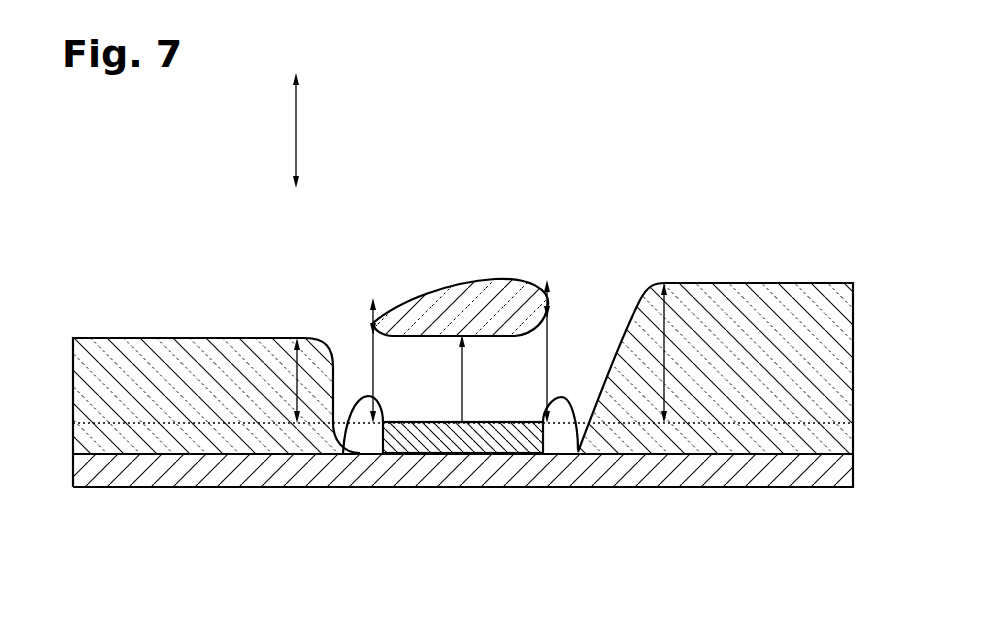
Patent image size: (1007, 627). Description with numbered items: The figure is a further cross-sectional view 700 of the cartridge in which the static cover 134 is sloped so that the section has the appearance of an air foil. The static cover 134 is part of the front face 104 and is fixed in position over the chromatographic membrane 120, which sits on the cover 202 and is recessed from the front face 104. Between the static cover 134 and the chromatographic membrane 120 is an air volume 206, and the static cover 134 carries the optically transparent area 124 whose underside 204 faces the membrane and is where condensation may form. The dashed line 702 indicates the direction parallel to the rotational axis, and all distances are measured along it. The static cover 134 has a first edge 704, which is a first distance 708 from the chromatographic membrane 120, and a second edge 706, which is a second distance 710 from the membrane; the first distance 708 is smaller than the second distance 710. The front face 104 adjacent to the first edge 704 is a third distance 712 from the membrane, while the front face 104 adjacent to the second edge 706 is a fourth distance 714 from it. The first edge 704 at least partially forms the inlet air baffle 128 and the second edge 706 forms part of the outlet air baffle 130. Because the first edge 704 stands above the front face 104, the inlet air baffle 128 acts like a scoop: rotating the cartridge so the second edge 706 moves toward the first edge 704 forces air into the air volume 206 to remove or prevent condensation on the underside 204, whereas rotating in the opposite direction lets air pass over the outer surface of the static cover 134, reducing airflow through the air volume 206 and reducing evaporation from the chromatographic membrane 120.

The cross sectional view 700 is at (118, 272).
The parallel to rotational axis 702 is at (293, 135).
The front face 104 is at (190, 337).
The chromatographic membrane 120 is at (403, 440).
The optically transparent area 124 is at (480, 268).
The inlet air baffle 128 is at (365, 383).
The outlet air baffle 130 is at (683, 258).
The static cover 134 is at (437, 290).
The cover 202 is at (115, 470).
The underside of optically transparent area 204 is at (458, 428).
The air volume 206 is at (487, 378).
The first edge 704 is at (373, 298).
The second edge 706 is at (547, 282).
The first distance to chromatographic membrane 708 is at (343, 445).
The second distance to chromatographic membrane 710 is at (578, 452).
The third distance to chromatographic membrane 712 is at (260, 445).
The fourth distance to chromatographic membrane 714 is at (673, 388).